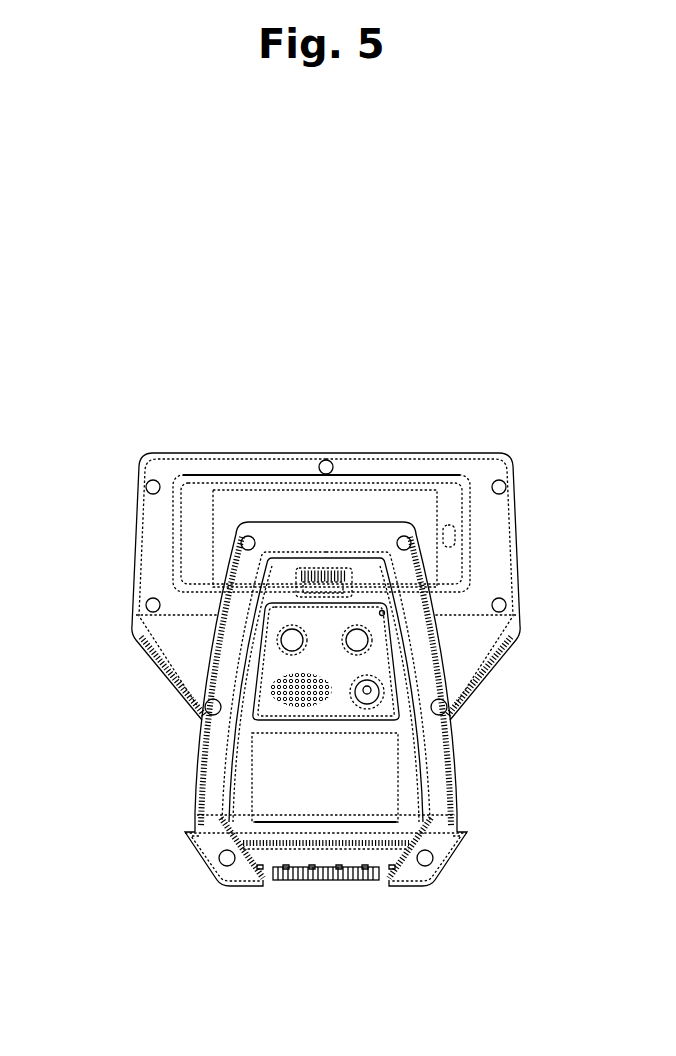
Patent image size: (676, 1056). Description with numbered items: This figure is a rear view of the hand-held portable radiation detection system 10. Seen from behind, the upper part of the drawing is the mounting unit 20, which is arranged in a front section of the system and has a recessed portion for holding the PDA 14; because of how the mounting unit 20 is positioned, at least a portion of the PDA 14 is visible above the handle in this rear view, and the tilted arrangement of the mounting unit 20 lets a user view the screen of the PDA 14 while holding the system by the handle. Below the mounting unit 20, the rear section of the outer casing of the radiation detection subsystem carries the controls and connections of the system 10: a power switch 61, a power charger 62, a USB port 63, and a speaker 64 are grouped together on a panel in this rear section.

The hand-held portable radiation detection system 10 is at (565, 348).
The mounting unit 20 is at (198, 475).
The PDA 14 is at (445, 530).
The power switch 61 is at (372, 694).
The power charger 62 is at (362, 645).
The USB port 63 is at (283, 650).
The speaker 64 is at (277, 703).